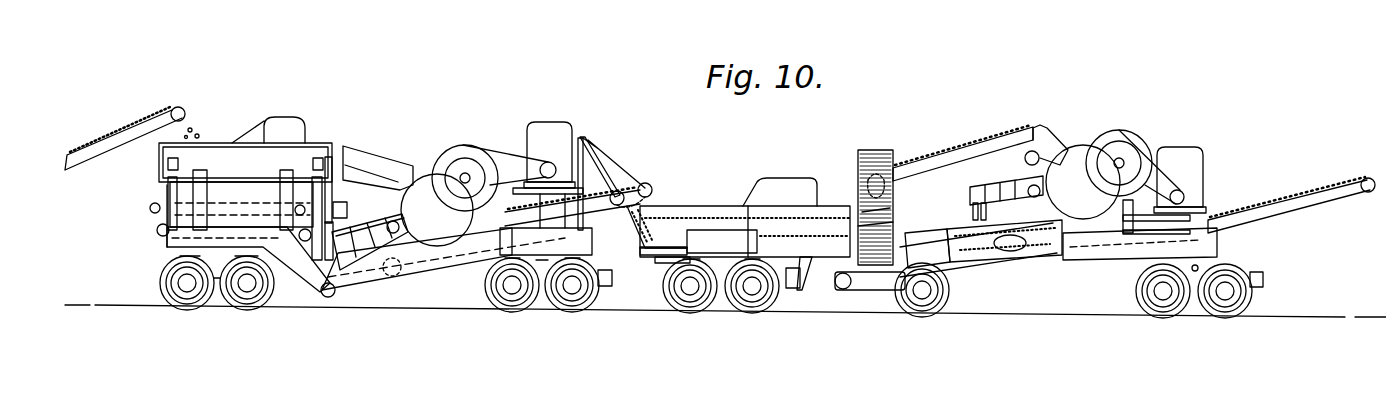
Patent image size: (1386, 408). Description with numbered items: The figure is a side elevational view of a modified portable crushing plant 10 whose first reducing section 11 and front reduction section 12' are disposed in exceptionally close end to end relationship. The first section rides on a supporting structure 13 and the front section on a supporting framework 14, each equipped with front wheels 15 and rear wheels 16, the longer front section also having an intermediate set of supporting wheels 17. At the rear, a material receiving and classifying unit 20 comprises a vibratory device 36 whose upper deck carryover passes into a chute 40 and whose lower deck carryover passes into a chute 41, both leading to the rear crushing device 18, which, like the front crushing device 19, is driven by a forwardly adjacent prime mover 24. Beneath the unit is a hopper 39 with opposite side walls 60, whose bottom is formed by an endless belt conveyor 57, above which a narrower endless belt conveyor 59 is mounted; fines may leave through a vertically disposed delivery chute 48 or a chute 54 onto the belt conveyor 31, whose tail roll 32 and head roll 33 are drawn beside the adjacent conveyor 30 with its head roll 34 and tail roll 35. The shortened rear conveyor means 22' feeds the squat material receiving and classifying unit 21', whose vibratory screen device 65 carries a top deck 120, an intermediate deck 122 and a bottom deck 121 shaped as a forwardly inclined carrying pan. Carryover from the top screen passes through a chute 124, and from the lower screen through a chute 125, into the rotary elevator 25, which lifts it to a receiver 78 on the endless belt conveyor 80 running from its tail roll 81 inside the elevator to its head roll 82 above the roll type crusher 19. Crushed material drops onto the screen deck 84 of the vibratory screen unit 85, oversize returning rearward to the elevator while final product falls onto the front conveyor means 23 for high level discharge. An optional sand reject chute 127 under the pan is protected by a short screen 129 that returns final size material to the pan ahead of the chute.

The crushing plant 10 is at (677, 121).
The first reducing section 11 is at (415, 125).
The front reduction section 12' is at (1081, 193).
The supporting structure 13 is at (306, 268).
The supporting structure 14 is at (885, 292).
The front wheels 15 is at (545, 300).
The rear wheels 16 is at (218, 300).
The intermediate set of supporting wheels 17 is at (951, 295).
The rear crushing device 18 is at (424, 164).
The front crushing device 19 is at (1086, 132).
The material receiving and classifying unit 20 is at (216, 127).
The material receiving and classifying unit 21' is at (778, 182).
The rear conveyor means 22' is at (562, 252).
The front conveyor means 23 is at (1290, 178).
The prime mover 24 is at (548, 127).
The elevator 25 is at (876, 152).
The conveyor 30 is at (645, 183).
The belt conveyor 31 is at (602, 158).
The tail roll 32 is at (328, 298).
The head roll 33 is at (622, 170).
The head roll 34 is at (654, 190).
The tail roll 35 is at (400, 275).
The vibratory device 36 is at (305, 158).
The hopper 39 is at (184, 194).
The chute 40 is at (358, 153).
The chute 41 is at (368, 178).
The delivery chute 48 is at (340, 210).
The chute 54 is at (328, 262).
The endless belt conveyor 57 is at (157, 231).
The endless belt conveyor 59 is at (150, 208).
The side walls 60 is at (236, 197).
The vibratory screen device 65 is at (725, 195).
The receiver 78 is at (858, 170).
The endless belt conveyor 80 is at (946, 152).
The tail roll 81 is at (858, 187).
The head roll 82 is at (1034, 135).
The screen deck 84 is at (955, 232).
The vibratory screen unit 85 is at (907, 241).
The top deck 120 is at (667, 210).
The bottom deck 121 is at (670, 265).
The intermediate deck 122 is at (657, 258).
The chute 124 is at (860, 208).
The chute 125 is at (858, 226).
The sand reject chute 127 is at (778, 308).
The short screen 129 is at (804, 286).